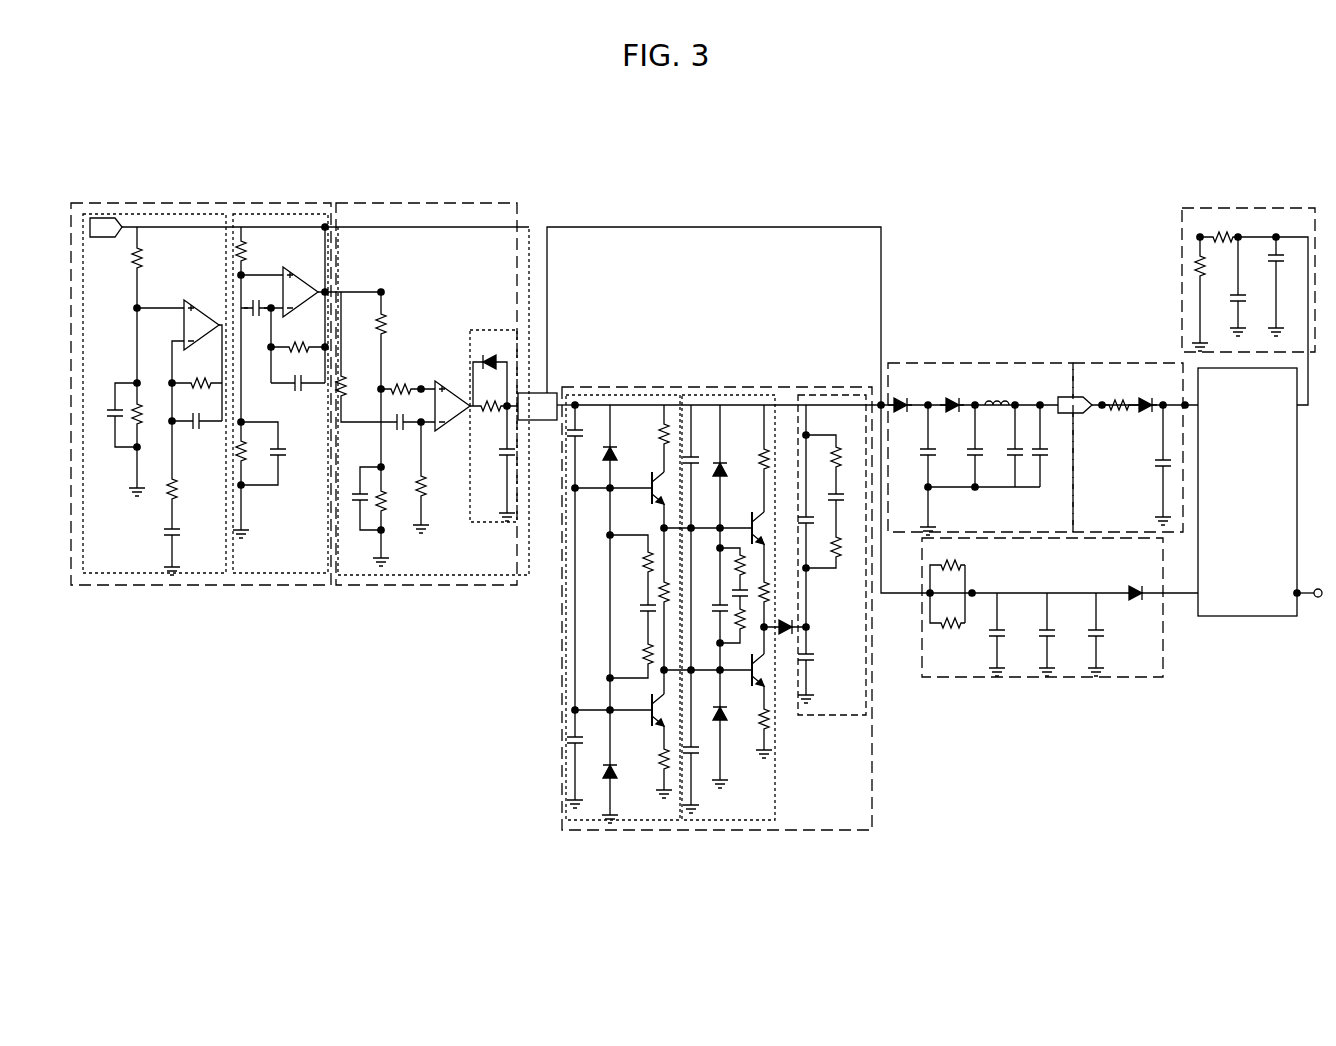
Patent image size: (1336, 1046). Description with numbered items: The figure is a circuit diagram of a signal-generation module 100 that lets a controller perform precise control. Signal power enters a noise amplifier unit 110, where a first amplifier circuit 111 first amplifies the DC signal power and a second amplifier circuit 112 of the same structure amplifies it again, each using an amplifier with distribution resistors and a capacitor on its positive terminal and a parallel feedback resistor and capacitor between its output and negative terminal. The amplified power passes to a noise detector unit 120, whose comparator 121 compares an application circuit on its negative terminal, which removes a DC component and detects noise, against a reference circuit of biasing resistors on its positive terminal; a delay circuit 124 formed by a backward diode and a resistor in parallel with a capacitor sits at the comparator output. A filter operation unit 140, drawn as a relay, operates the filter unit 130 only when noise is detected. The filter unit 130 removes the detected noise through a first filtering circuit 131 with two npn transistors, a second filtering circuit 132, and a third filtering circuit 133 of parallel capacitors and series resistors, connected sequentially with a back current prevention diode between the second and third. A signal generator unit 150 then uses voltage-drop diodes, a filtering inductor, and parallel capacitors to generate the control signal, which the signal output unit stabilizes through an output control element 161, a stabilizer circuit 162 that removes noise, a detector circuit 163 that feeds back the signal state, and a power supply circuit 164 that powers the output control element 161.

The signal-generation module 100 is at (932, 191).
The noise amplifier unit 110 is at (212, 203).
The first amplifier circuit 111 is at (205, 573).
The second amplifier circuit 112 is at (303, 573).
The noise detector unit 120 is at (427, 203).
The comparator 121 is at (448, 420).
The delay circuit 124 is at (491, 330).
The filter unit 130 is at (719, 387).
The first filtering circuit 131 is at (625, 830).
The second filtering circuit 132 is at (722, 830).
The third filtering circuit 133 is at (833, 715).
The filter operation unit 140 is at (537, 393).
The signal generator unit 150 is at (979, 363).
The output control element 161 is at (1233, 545).
The stabilizer circuit 162 is at (1127, 363).
The detector circuit 163 is at (1182, 237).
The power supply circuit 164 is at (1040, 677).